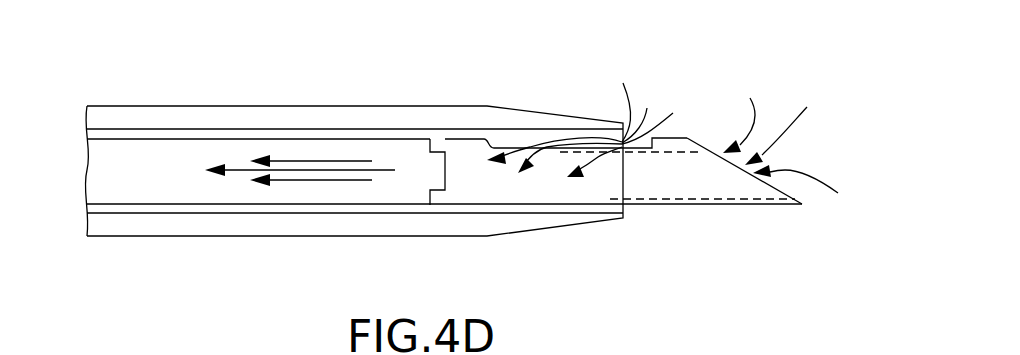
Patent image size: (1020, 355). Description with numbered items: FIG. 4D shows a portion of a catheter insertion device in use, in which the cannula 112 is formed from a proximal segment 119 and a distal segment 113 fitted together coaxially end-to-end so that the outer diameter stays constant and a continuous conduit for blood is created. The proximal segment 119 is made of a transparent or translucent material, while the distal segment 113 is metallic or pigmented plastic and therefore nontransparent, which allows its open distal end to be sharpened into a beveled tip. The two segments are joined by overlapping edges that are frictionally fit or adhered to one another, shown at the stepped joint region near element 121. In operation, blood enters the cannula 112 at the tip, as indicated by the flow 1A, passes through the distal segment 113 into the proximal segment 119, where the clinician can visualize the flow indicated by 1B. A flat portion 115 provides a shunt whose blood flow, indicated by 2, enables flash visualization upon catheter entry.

The blood flow 1A is at (779, 120).
The blood flow 1B is at (240, 152).
The blood flow 2 is at (543, 158).
The cannula 112 is at (692, 182).
The distal segment 113 is at (740, 205).
The flat portion 115 is at (512, 148).
The proximal segment 119 is at (410, 147).
The plunger protrusion 121 is at (443, 172).